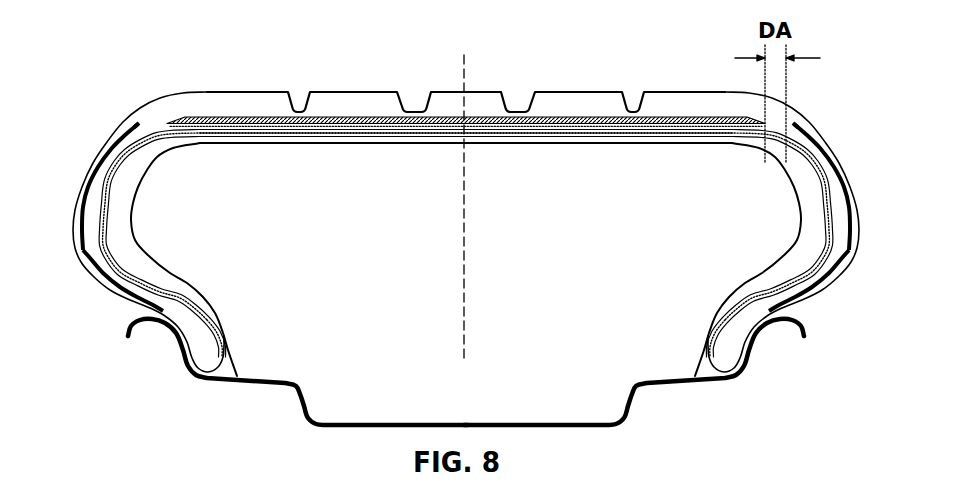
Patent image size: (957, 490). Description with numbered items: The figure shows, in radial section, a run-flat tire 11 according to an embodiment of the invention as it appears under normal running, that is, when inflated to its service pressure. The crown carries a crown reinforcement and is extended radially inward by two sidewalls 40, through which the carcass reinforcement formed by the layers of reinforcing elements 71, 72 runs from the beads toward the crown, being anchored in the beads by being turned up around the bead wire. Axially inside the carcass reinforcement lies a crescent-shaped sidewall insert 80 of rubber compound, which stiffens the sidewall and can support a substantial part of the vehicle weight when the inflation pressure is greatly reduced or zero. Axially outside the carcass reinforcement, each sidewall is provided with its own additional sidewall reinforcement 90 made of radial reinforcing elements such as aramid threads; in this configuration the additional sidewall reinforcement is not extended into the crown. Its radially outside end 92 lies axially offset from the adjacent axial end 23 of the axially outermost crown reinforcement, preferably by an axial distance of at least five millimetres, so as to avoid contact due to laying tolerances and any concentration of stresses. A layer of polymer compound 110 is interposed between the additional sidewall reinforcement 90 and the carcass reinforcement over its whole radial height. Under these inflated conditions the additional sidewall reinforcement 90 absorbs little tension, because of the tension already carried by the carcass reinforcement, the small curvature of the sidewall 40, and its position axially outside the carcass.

The tire 11 is at (118, 97).
The axial end of the axially outermost crown reinforcement 23 is at (760, 120).
The sidewall 40 is at (77, 192).
The layer of reinforcing elements 71 is at (192, 297).
The layer of reinforcing elements 72 is at (222, 343).
The sidewall insert 80 is at (125, 205).
The additional sidewall reinforcement 90 is at (117, 138).
The radially outside end of the additional sidewall reinforcement 92 is at (138, 124).
The layer of polymer compound 110 is at (115, 272).